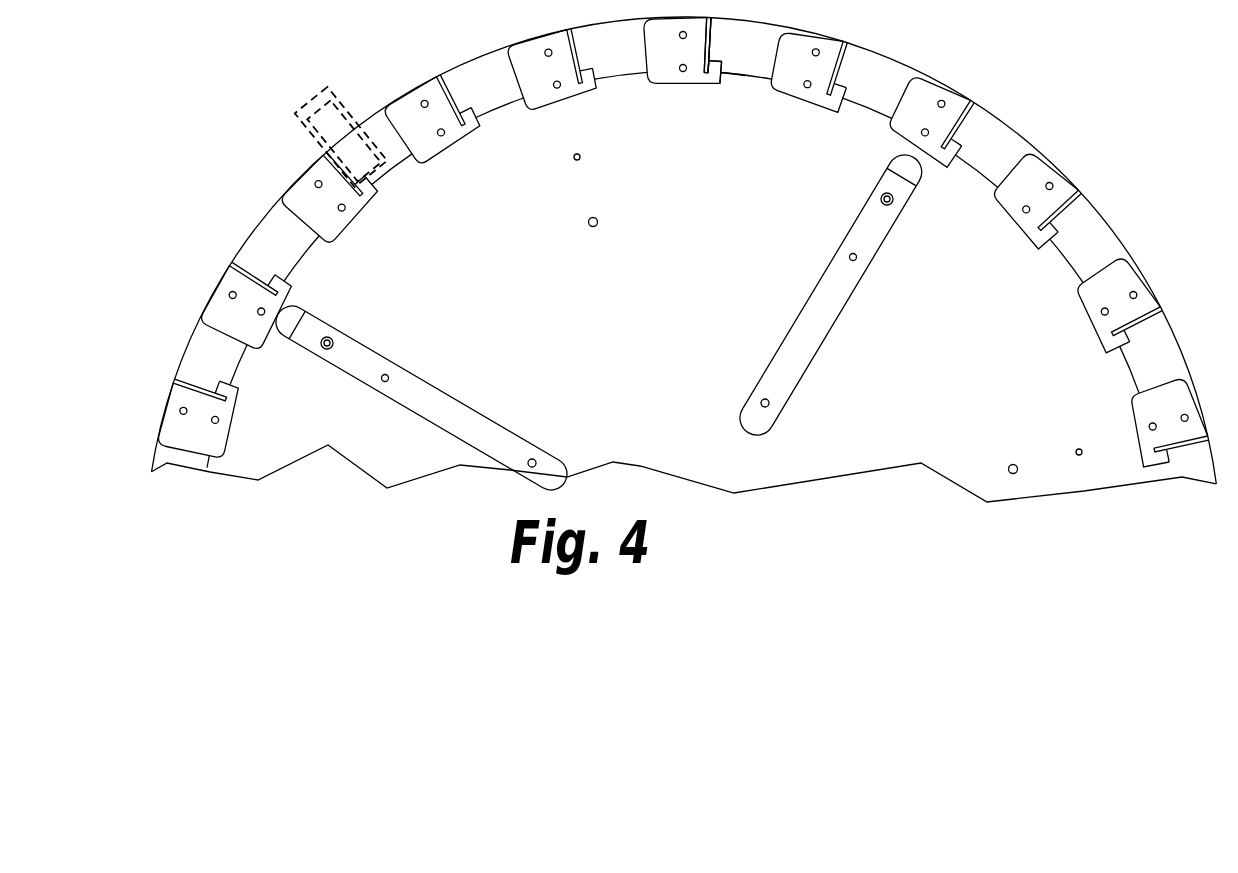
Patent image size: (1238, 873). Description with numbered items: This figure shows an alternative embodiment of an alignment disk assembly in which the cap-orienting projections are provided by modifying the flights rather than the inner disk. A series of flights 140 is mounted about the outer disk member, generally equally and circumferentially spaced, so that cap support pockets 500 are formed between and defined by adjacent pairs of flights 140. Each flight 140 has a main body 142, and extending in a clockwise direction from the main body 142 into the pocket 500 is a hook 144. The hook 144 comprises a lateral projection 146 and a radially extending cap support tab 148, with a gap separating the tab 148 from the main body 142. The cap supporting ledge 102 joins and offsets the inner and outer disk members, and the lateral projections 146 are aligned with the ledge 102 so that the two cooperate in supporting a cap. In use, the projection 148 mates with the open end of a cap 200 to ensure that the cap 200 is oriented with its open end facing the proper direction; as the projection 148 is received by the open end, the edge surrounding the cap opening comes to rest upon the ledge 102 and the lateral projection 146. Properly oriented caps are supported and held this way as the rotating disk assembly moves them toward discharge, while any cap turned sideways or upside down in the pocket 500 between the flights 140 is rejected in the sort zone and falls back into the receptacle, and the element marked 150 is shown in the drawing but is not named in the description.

The cap supporting ledge 102 is at (307, 248).
The flight 140 is at (427, 148).
The main body 142 is at (664, 51).
The hook 144 is at (726, 115).
The lateral projection 146 is at (713, 82).
The cap support tab 148 is at (730, 84).
The notch 150 is at (710, 63).
The cap 200 is at (282, 121).
The cap support pocket 500 is at (273, 229).